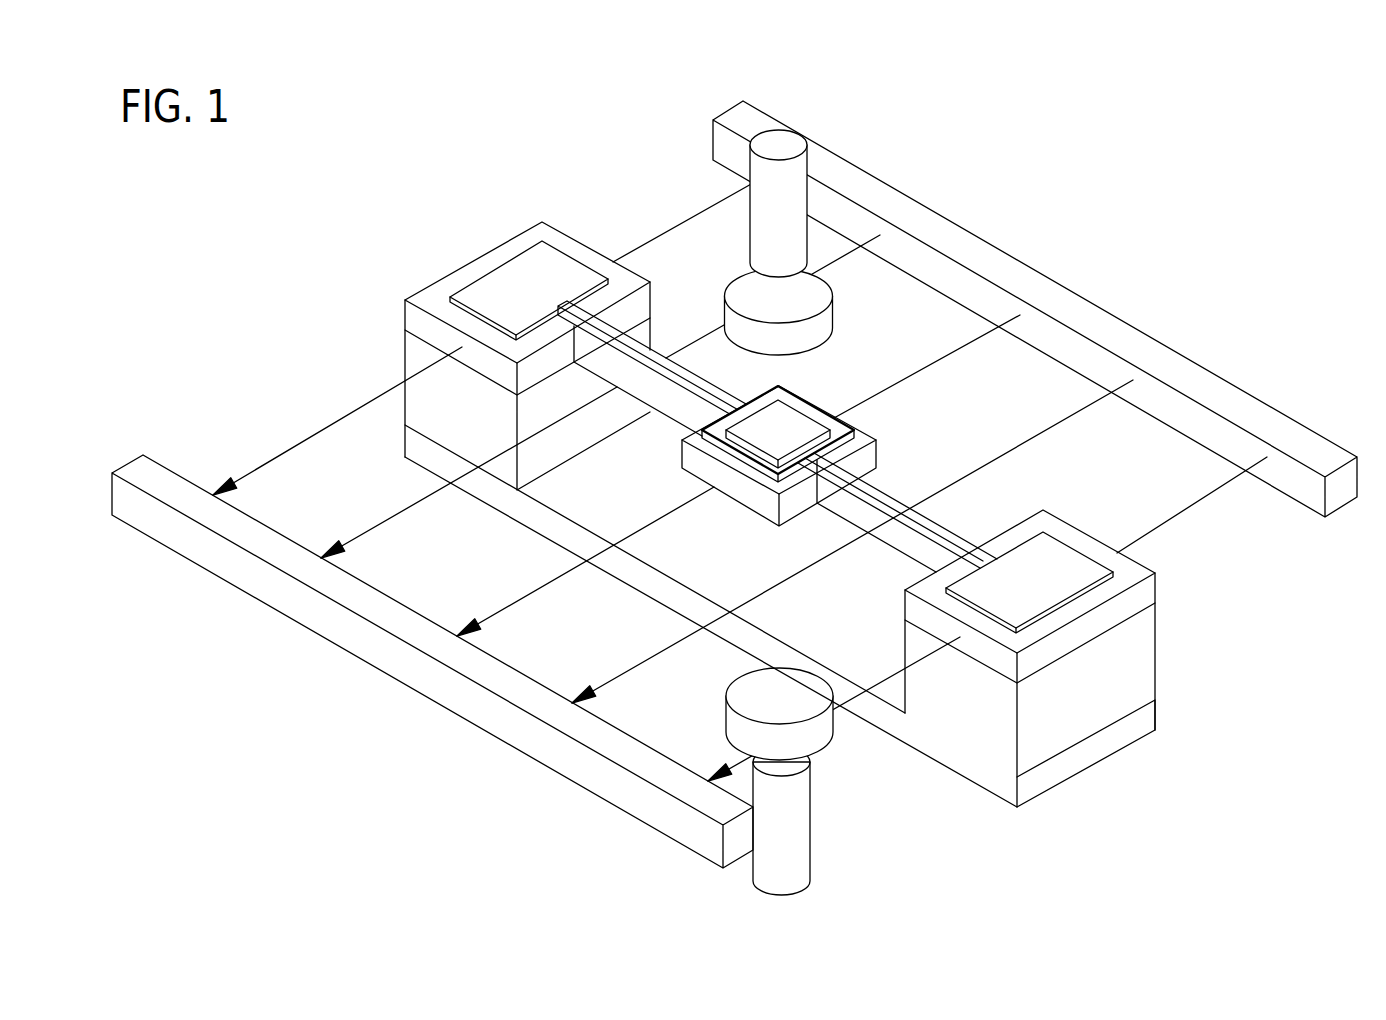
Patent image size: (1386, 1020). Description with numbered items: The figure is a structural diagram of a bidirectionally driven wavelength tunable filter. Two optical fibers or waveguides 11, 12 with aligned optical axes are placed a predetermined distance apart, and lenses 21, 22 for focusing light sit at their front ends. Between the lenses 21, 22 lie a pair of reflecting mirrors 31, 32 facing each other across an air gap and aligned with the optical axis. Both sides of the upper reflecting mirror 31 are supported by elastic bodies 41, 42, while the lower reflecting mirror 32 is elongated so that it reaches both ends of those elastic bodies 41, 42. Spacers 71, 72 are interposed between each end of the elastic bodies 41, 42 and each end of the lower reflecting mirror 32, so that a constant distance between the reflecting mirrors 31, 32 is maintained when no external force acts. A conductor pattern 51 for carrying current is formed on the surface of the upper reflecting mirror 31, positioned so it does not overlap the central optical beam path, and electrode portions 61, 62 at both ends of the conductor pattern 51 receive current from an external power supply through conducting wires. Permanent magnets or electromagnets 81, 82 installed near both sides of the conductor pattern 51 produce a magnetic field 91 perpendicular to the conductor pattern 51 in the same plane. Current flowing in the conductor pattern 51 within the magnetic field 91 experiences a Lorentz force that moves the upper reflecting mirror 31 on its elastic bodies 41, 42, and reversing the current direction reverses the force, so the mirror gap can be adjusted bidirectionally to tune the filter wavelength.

The optical fiber or waveguide 11 is at (780, 202).
The optical fiber or waveguide 12 is at (795, 835).
The lens 21 is at (823, 318).
The lens 22 is at (812, 738).
The upper reflecting mirror 31 is at (862, 436).
The lower reflecting mirror 32 is at (1057, 768).
The elastic body 41 is at (650, 393).
The elastic body 42 is at (857, 510).
The conductor pattern 51 is at (940, 518).
The electrode portion 61 is at (505, 288).
The electrode portion 62 is at (1073, 576).
The spacer 71 is at (430, 400).
The spacer 72 is at (1141, 663).
The permanent magnet or electromagnet 81 is at (1087, 318).
The permanent magnet or electromagnet 82 is at (368, 648).
The magnetic field 91 is at (320, 420).